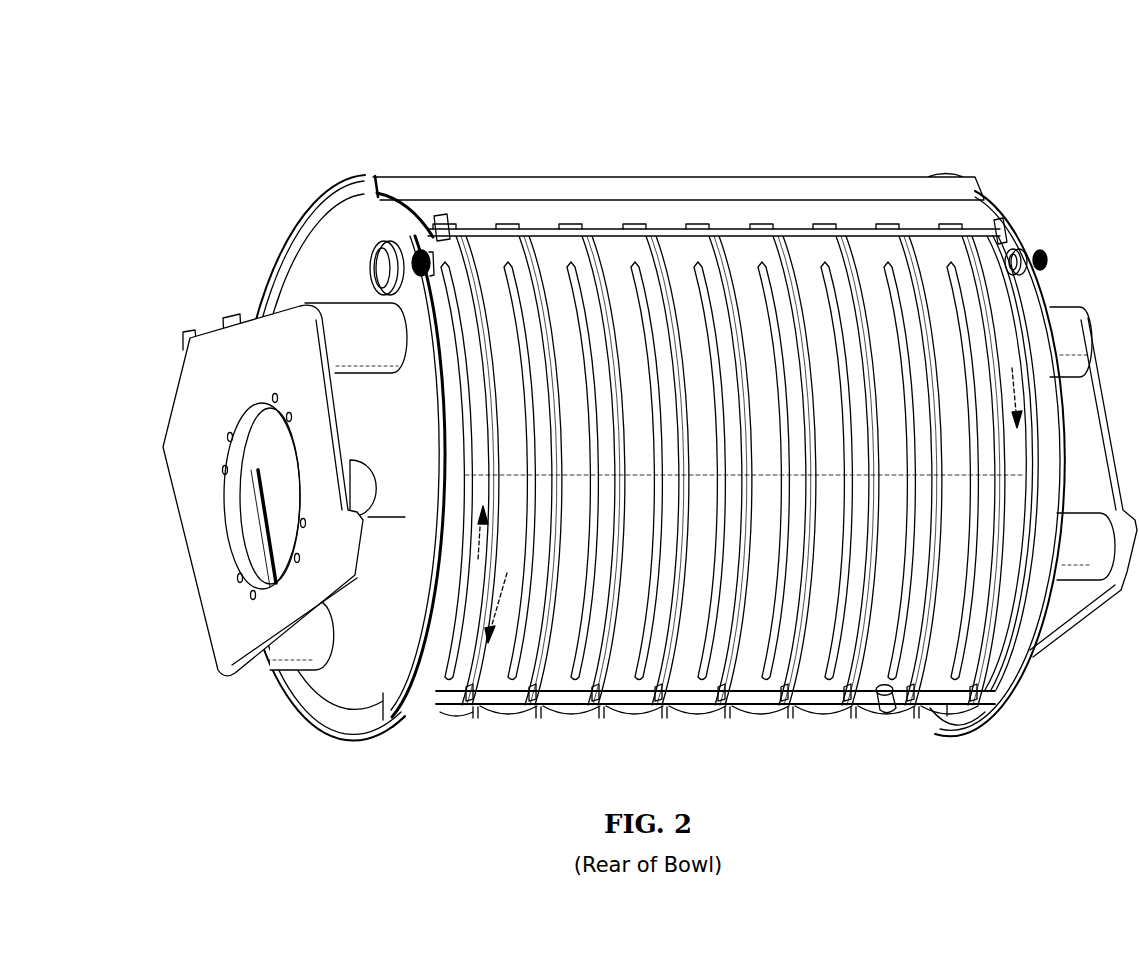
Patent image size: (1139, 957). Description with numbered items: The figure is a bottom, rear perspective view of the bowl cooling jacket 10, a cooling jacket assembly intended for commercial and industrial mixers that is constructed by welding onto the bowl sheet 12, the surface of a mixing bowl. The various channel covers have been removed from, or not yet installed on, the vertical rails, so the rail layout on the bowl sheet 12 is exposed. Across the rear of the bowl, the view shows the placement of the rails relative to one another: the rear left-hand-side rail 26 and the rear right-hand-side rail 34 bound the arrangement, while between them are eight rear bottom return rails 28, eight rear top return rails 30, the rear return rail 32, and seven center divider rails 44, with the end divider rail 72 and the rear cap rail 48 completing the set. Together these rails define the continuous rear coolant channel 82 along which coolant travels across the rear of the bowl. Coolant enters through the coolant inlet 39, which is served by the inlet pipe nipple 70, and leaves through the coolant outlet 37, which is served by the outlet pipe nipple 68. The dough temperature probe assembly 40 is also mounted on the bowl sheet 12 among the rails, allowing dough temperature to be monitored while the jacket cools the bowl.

The bowl cooling jacket 10 is at (307, 104).
The bowl sheet 12 is at (962, 182).
The rear left-hand-side rail 26 is at (1030, 312).
The rear bottom return rail 28 is at (520, 226).
The rear top return rail 30 is at (508, 262).
The rear return rail 32 is at (472, 226).
The rear right-hand-side rail 34 is at (431, 222).
The coolant outlet 37 is at (405, 258).
The coolant inlet 39 is at (1049, 258).
The dough temperature probe assembly 40 is at (889, 713).
The center divider rail 44 is at (502, 709).
The rear cap rail 48 is at (447, 220).
The outlet pipe nipple 68 is at (346, 185).
The inlet pipe nipple 70 is at (1035, 238).
The end divider rail 72 is at (948, 707).
The continuous rear coolant channel 82 is at (752, 491).